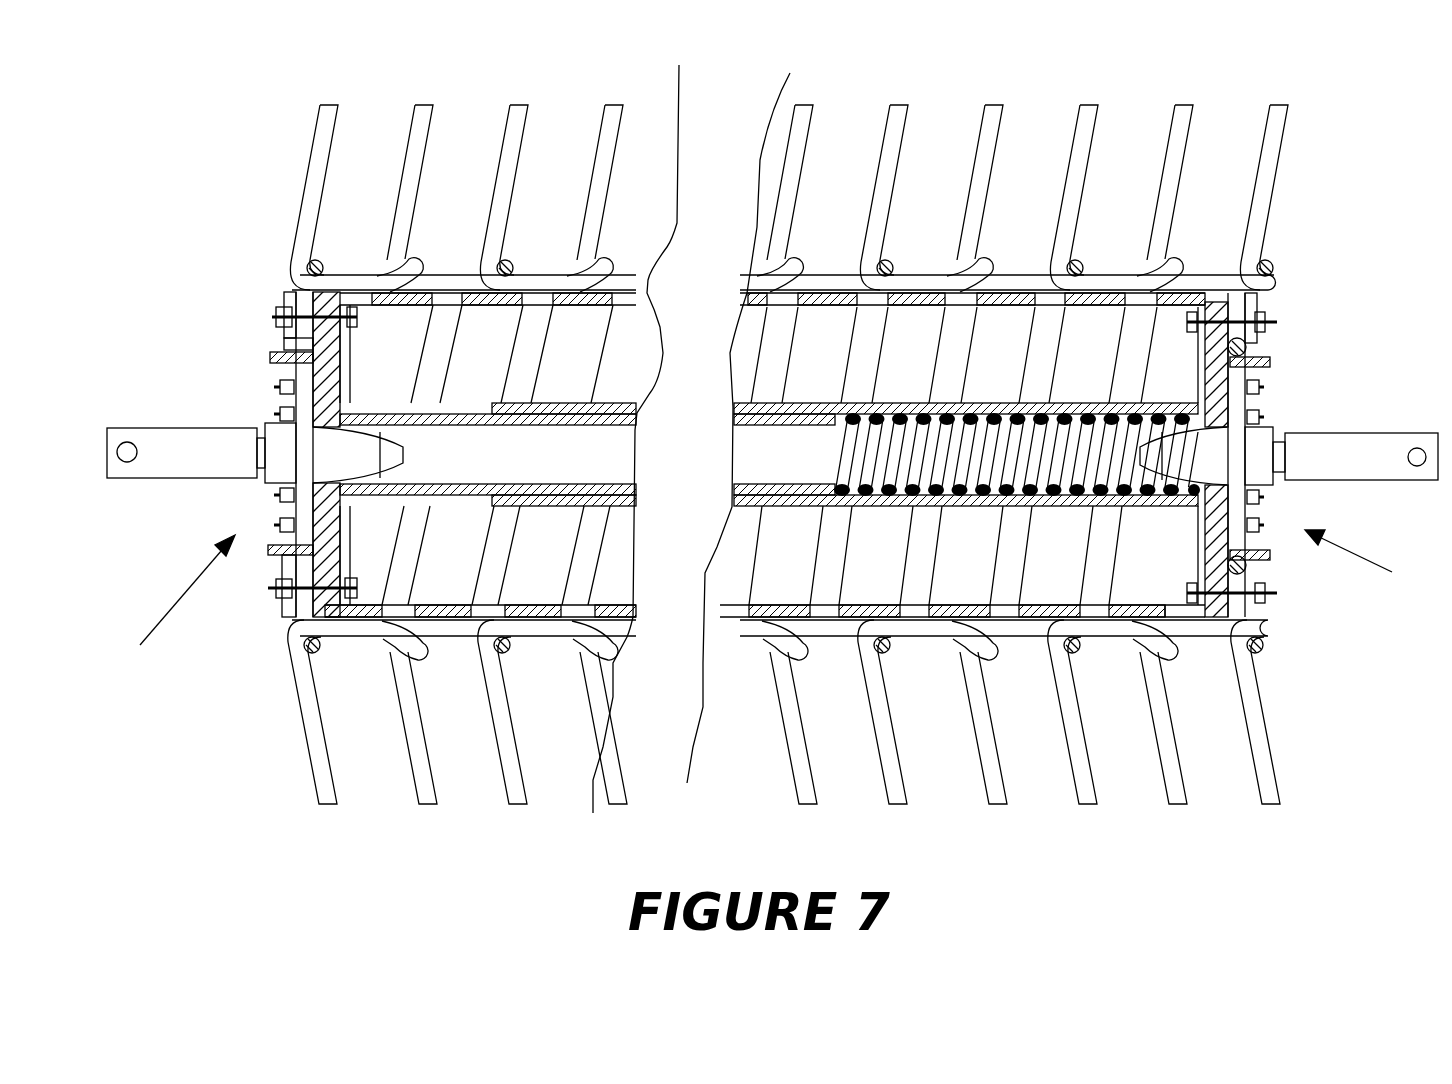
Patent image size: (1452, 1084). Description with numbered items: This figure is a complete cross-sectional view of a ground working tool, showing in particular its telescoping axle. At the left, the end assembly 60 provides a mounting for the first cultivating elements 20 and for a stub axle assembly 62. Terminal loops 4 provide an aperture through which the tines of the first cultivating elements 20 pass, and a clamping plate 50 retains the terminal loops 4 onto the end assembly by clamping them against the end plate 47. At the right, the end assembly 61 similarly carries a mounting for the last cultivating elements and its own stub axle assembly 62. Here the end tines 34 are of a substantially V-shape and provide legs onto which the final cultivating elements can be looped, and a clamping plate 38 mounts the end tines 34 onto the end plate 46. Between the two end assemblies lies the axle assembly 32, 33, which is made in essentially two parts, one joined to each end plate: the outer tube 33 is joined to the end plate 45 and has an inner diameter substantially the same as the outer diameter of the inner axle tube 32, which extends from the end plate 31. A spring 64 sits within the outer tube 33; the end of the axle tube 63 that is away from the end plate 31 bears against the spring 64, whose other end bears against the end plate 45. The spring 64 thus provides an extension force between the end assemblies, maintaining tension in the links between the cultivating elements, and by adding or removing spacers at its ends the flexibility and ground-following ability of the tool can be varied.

The first cultivating elements 20 is at (303, 222).
The terminal loops 4 is at (300, 300).
The stub axle assembly 62 is at (190, 450).
The clamping plate 50 is at (283, 333).
The end plate 47 is at (318, 372).
The end plate 31 is at (342, 400).
The end assembly 60 is at (172, 608).
The inner axle tube 32 is at (458, 577).
The axle tube 63 is at (834, 417).
The outer tube 33 is at (822, 496).
The spring 64 is at (967, 453).
The end tines 34 is at (1262, 190).
The clamping plate 38 is at (1255, 300).
The end plate 45 is at (1243, 347).
The end plate 46 is at (1210, 392).
The end assembly 61 is at (1368, 564).